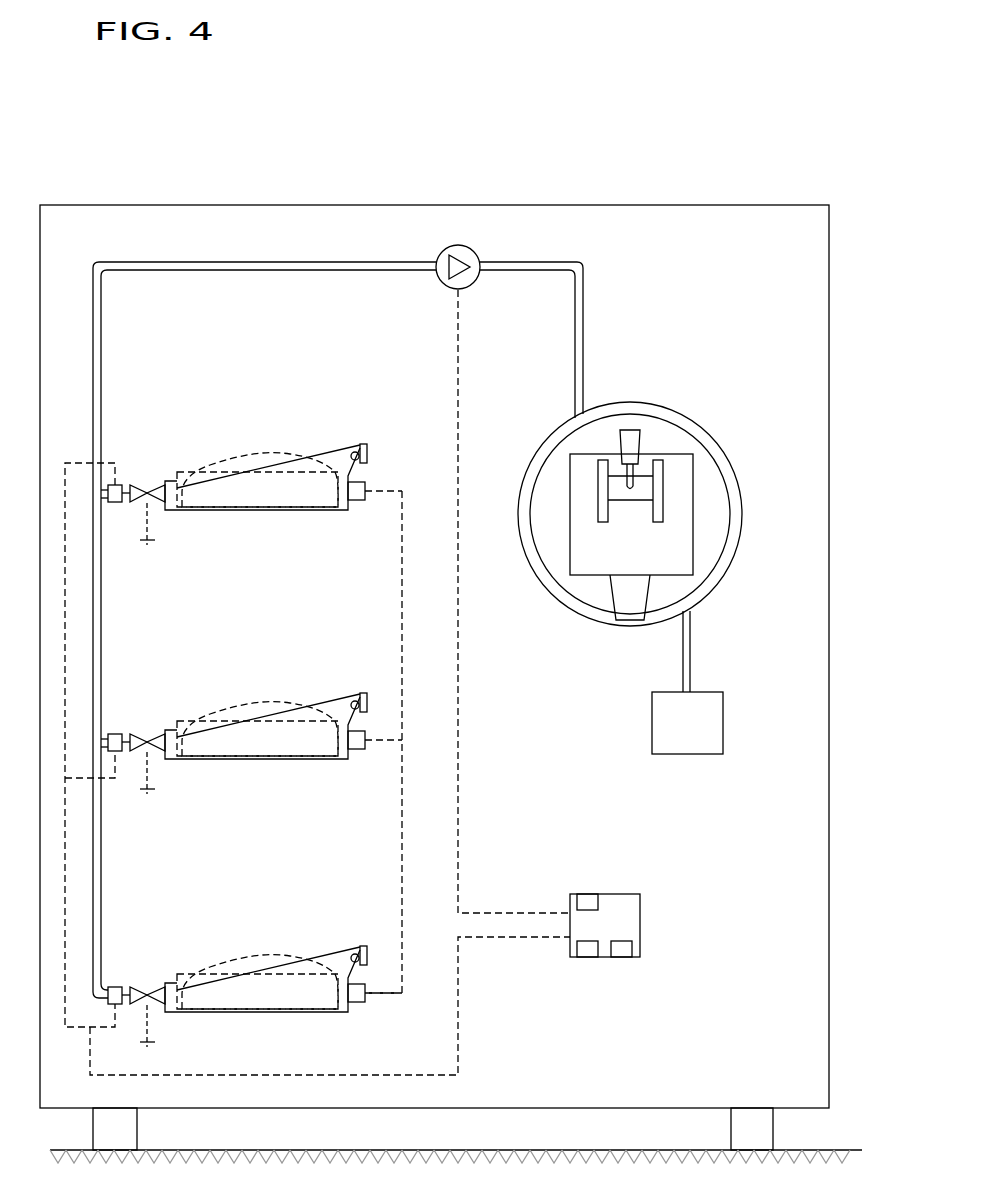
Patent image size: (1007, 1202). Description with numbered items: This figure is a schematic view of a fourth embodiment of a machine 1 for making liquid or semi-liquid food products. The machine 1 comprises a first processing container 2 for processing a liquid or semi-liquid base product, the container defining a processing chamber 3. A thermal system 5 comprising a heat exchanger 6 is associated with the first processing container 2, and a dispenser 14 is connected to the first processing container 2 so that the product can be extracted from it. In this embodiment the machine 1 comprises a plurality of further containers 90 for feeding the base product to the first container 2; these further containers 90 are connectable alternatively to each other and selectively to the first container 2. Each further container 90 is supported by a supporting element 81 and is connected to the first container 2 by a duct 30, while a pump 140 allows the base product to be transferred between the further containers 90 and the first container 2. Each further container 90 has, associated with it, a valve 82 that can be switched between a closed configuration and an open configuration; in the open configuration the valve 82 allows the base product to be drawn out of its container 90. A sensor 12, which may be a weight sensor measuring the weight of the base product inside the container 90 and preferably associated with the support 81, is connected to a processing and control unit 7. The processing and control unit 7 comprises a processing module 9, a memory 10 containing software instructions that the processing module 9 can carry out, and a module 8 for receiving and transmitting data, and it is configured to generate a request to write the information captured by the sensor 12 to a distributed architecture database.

The machine 1 is at (607, 175).
The first processing container 2 is at (667, 514).
The processing chamber 3 is at (667, 514).
The thermal system 5 is at (694, 737).
The heat exchanger 6 is at (552, 603).
The processing and control unit 7 is at (638, 929).
The module for receiving and transmitting data 8 is at (625, 960).
The processing module 9 is at (588, 893).
The memory 10 is at (588, 954).
The sensor 12 is at (120, 485).
The dispenser 14 is at (698, 516).
The duct 30 is at (520, 260).
The supporting element 81 is at (248, 513).
The valve 82 is at (152, 506).
The further container 90 is at (230, 462).
The pump 140 is at (443, 286).